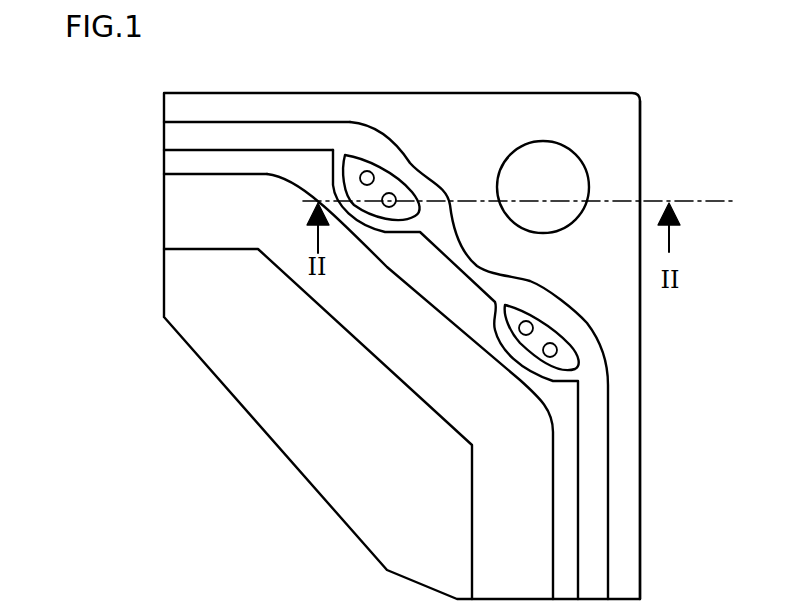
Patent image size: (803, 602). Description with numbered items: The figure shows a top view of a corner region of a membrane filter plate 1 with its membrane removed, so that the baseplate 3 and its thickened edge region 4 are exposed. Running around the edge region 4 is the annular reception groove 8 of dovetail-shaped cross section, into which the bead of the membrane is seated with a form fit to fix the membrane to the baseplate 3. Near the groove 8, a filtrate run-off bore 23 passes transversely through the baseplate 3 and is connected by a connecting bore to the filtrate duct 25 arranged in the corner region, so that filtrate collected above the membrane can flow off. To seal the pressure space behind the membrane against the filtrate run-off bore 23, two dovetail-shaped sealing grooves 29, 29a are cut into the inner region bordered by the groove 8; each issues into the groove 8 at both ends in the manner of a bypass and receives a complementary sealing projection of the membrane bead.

The membrane filter plate 1 is at (485, 93).
The baseplate 3 is at (623, 117).
The thickened edge region 4 is at (157, 95).
The reception groove 8 is at (606, 503).
The filtrate run-off bore 23 is at (368, 171).
The filtrate duct 25 is at (543, 167).
The sealing groove 29 is at (367, 93).
The sealing groove 29a is at (540, 372).